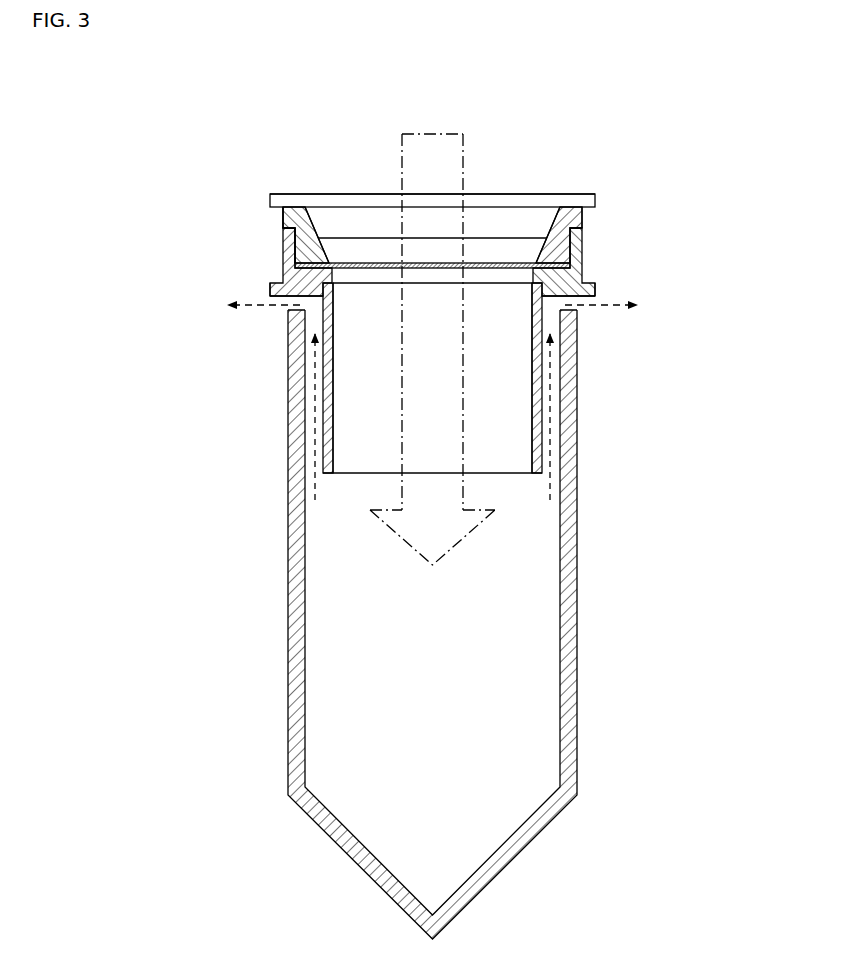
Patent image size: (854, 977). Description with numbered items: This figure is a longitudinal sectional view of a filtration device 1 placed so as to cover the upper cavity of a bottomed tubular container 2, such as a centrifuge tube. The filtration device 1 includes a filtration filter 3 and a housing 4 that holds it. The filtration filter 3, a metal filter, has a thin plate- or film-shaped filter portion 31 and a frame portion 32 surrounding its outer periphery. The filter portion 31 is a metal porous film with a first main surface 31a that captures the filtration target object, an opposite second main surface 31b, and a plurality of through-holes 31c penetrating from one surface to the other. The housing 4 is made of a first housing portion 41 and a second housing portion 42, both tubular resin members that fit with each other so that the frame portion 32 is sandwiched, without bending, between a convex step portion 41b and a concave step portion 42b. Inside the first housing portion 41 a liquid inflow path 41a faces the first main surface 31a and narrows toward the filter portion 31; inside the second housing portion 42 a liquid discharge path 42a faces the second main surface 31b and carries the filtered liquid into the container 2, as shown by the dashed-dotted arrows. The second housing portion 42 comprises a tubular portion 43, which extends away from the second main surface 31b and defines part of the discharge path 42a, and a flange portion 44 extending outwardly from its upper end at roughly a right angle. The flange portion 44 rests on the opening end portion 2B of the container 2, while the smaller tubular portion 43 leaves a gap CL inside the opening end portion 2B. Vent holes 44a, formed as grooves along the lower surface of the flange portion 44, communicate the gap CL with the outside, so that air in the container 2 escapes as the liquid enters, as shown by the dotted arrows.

The filtration device 1 is at (244, 226).
The container 2 is at (577, 583).
The opening end portion 2B is at (293, 314).
The filtration filter 3 is at (441, 219).
The filter portion 31 is at (432, 238).
The first main surface 31a is at (345, 238).
The second main surface 31b is at (378, 272).
The through-holes 31c is at (390, 263).
The frame portion 32 is at (560, 250).
The housing 4 is at (431, 287).
The first housing portion 41 is at (583, 216).
The liquid inflow path 41a is at (333, 247).
The convex step portion 41b is at (300, 232).
The second housing portion 42 is at (431, 340).
The liquid discharge path 42a is at (333, 372).
The concave step portion 42b is at (296, 247).
The tubular portion 43 is at (545, 378).
The flange portion 44 is at (272, 294).
The vent hole 44a is at (278, 312).
The gap CL is at (313, 423).